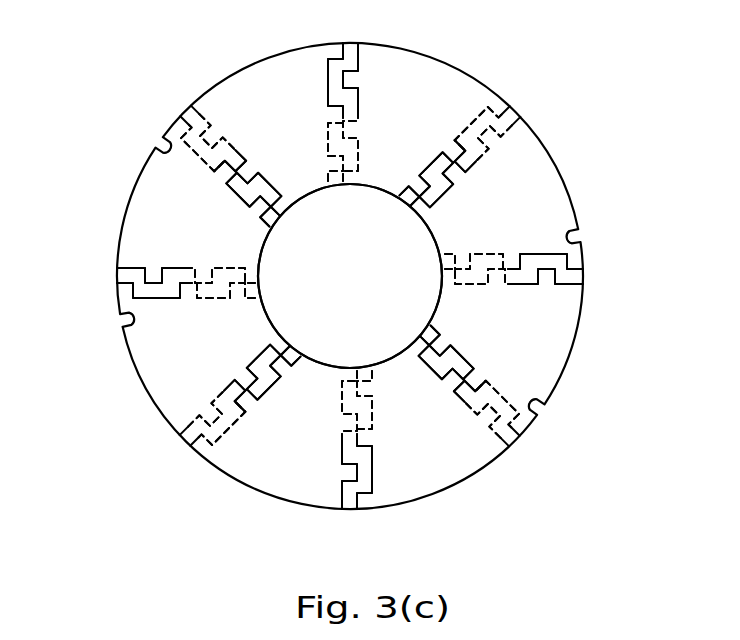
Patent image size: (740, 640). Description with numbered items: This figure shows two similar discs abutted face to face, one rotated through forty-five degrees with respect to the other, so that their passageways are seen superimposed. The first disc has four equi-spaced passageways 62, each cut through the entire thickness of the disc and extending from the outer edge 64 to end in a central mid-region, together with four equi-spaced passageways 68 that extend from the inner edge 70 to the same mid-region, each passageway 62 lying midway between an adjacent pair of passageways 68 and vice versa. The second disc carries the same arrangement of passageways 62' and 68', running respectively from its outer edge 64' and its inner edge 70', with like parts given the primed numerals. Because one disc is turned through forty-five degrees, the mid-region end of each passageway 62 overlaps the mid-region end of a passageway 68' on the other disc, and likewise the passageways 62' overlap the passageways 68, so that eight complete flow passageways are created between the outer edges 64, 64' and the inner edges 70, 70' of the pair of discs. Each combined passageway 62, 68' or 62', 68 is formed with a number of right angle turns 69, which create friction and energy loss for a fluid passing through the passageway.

The passageway 62 is at (372, 280).
The passageway 62' is at (348, 277).
The outer edge 64 is at (350, 262).
The outer edge 64' is at (350, 224).
The passageway 68 is at (364, 276).
The passageway 68' is at (367, 293).
The right angle turns 69 is at (212, 128).
The inner edge 70 is at (350, 276).
The inner edge 70' is at (350, 276).